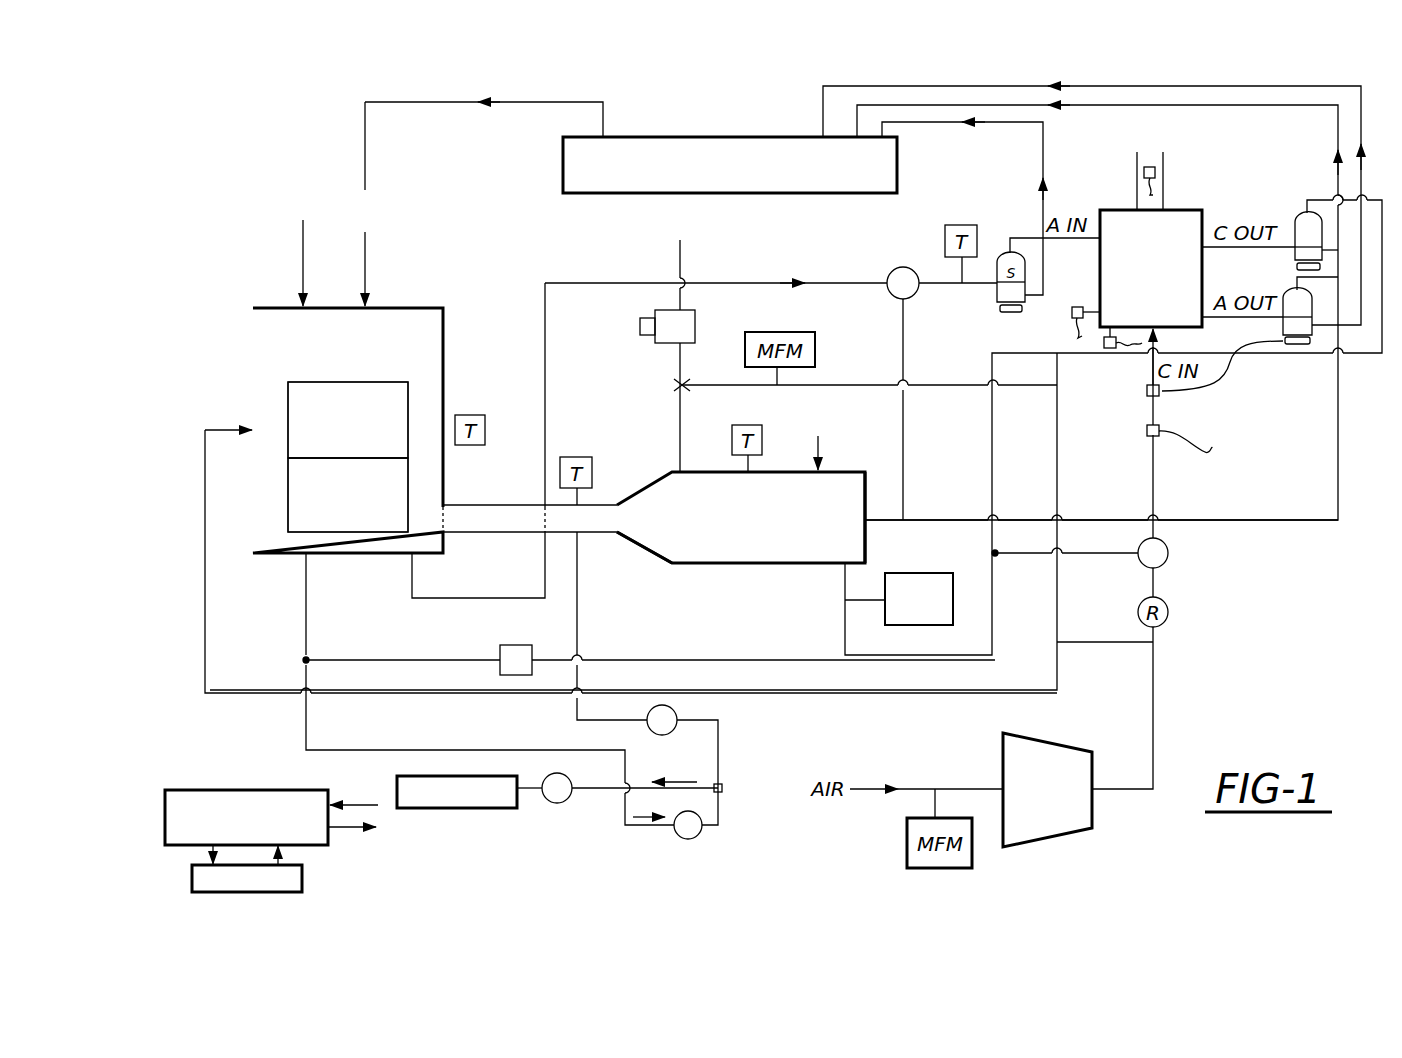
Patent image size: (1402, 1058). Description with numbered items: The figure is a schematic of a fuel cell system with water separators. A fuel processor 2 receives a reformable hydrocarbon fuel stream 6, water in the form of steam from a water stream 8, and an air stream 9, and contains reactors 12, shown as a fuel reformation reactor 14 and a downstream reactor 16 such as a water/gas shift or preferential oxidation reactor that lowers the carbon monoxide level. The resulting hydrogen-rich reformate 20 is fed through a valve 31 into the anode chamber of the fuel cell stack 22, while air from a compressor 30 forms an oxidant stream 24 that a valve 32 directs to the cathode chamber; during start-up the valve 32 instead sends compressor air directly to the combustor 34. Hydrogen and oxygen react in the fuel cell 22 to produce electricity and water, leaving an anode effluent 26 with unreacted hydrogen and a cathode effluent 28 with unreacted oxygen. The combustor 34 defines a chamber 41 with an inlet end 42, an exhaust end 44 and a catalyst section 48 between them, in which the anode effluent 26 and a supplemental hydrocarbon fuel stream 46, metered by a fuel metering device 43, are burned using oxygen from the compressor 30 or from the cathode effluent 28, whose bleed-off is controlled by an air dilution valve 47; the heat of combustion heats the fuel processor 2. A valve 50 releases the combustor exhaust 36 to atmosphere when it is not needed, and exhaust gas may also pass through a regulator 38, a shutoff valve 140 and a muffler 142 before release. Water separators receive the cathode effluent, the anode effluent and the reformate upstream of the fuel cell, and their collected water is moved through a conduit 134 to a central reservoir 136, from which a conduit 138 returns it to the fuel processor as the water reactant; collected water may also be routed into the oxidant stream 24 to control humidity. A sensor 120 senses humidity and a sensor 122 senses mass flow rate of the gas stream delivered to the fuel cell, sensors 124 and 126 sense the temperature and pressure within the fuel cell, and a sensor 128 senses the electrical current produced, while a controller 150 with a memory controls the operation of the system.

The fuel processor 2 is at (250, 380).
The reformable hydrocarbon fuel stream 6 is at (303, 258).
The water stream 8 is at (365, 268).
The air stream 9 is at (205, 618).
The reactor 12 is at (348, 457).
The fuel reformation reactor 14 is at (408, 425).
The downstream reactor 16 is at (408, 503).
The hydrogen-rich reformate 20 is at (445, 598).
The fuel cell stack 22 is at (1138, 309).
The oxidant stream 24 is at (1156, 412).
The anode effluent 26 is at (1262, 325).
The cathode effluent 28 is at (1272, 250).
The compressor 30 is at (1003, 775).
The valve 31 is at (903, 267).
The valve 32 is at (1168, 557).
The combustor 34 is at (815, 438).
The combustor exhaust 36 is at (485, 518).
The regulator 38 is at (700, 835).
The chamber 41 is at (693, 548).
The inlet end 42 is at (862, 488).
The fuel metering device 43 is at (695, 328).
The exhaust end 44 is at (630, 545).
The hydrocarbon fuel stream 46 is at (680, 448).
The air dilution valve 47 is at (515, 645).
The catalyst section 48 is at (750, 555).
The valve 50 is at (668, 733).
The humidity sensor 120 is at (1147, 391).
The mass flow rate sensor 122 is at (1147, 431).
The temperature sensor 124 is at (1072, 312).
The pressure sensor 126 is at (1108, 350).
The current sensor 128 is at (1150, 167).
The conduit 134 is at (998, 126).
The central reservoir 136 is at (775, 137).
The conduit 138 is at (520, 102).
The shutoff valve 140 is at (568, 802).
The muffler 142 is at (455, 808).
The controller 150 is at (228, 789).